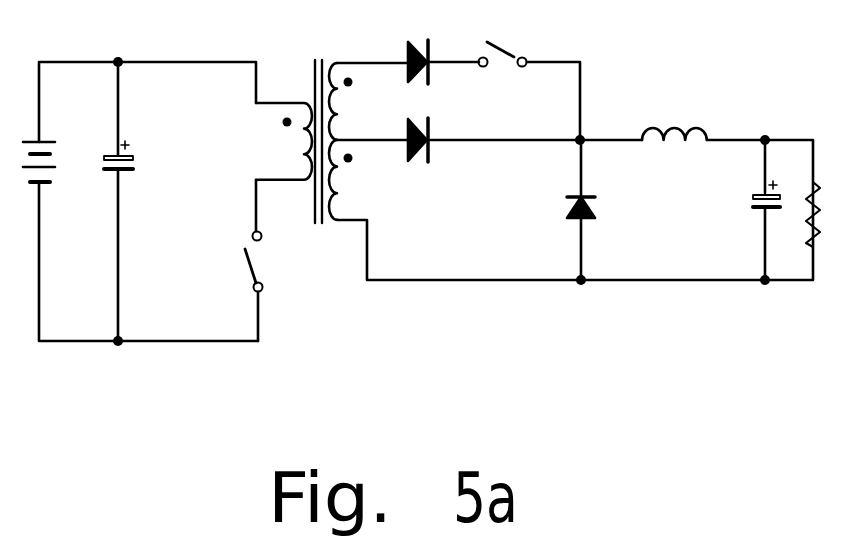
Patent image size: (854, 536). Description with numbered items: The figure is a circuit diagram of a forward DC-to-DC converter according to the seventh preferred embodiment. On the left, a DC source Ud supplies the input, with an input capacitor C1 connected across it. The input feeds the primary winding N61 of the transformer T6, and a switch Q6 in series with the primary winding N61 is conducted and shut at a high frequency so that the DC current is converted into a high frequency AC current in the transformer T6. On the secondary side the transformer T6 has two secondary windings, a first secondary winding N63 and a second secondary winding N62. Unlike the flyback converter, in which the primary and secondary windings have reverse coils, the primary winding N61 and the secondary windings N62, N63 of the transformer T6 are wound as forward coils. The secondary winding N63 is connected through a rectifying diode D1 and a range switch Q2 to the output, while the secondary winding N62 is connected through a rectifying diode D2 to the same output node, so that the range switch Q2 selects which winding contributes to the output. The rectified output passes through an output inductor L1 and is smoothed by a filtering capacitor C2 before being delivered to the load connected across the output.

The DC input voltage source Ud is at (55, 147).
The input capacitor C1 is at (133, 153).
The switch Q6 is at (223, 259).
The transformer T6 is at (314, 124).
The primary winding N61 is at (278, 141).
The secondary winding N62 is at (354, 180).
The secondary winding N63 is at (354, 101).
The second rectifying diode D1 is at (424, 50).
The rectifier diode D2 is at (425, 157).
The secondary switch Q2 is at (506, 40).
The output inductor L1 is at (674, 122).
The filtering capacitor C2 is at (750, 198).